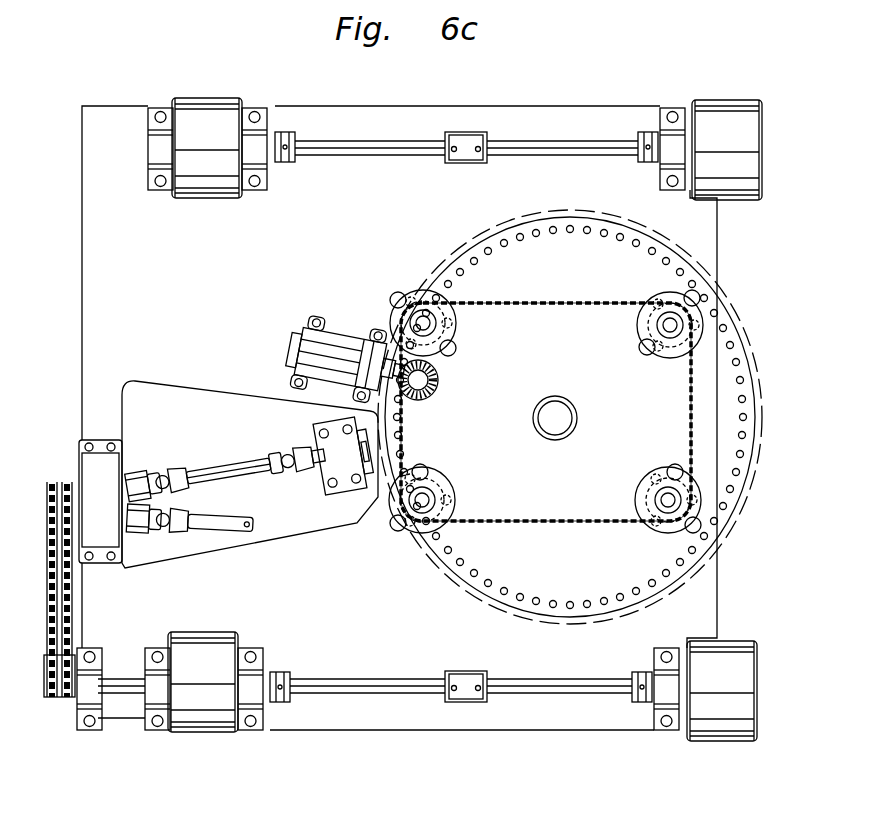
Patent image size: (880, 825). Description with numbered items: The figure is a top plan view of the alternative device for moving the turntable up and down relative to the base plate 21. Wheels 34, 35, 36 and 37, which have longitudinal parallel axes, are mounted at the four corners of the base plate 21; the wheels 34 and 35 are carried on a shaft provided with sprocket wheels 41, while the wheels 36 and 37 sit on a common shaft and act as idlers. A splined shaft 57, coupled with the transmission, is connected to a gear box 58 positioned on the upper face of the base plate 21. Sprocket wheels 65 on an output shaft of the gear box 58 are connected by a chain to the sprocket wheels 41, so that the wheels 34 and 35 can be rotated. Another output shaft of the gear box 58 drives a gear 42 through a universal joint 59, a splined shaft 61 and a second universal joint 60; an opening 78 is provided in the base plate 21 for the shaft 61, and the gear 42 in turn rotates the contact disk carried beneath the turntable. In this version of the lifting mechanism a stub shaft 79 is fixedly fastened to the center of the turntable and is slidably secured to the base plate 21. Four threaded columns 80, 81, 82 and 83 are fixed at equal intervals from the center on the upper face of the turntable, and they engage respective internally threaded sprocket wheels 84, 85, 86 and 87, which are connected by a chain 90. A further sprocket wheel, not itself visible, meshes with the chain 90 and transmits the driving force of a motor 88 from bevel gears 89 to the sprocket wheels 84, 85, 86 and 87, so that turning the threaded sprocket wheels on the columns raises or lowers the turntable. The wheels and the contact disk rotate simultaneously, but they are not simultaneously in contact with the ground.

The base plate 21 is at (227, 265).
The wheel 34 is at (707, 692).
The wheel 35 is at (190, 682).
The wheel 36 is at (192, 147).
The wheel 37 is at (711, 147).
The sprocket wheels 41 is at (52, 695).
The gear 42 is at (371, 497).
The splined shaft 57 is at (226, 531).
The gear box 58 is at (86, 507).
The universal joint 59 is at (150, 476).
The universal joint 60 is at (287, 474).
The splined shaft 61 is at (240, 476).
The sprocket wheels 65 is at (57, 482).
The opening 78 is at (195, 432).
The stub shaft 79 is at (576, 418).
The threaded column 80 is at (432, 500).
The threaded column 81 is at (432, 326).
The threaded column 82 is at (662, 328).
The threaded column 83 is at (663, 500).
The internally threaded sprocket wheel 84 is at (425, 473).
The internally threaded sprocket wheel 85 is at (421, 298).
The internally threaded sprocket wheel 86 is at (664, 305).
The internally threaded sprocket wheel 87 is at (663, 478).
The motor 88 is at (327, 336).
The bevel gears 89 is at (428, 392).
The chain 90 is at (532, 303).